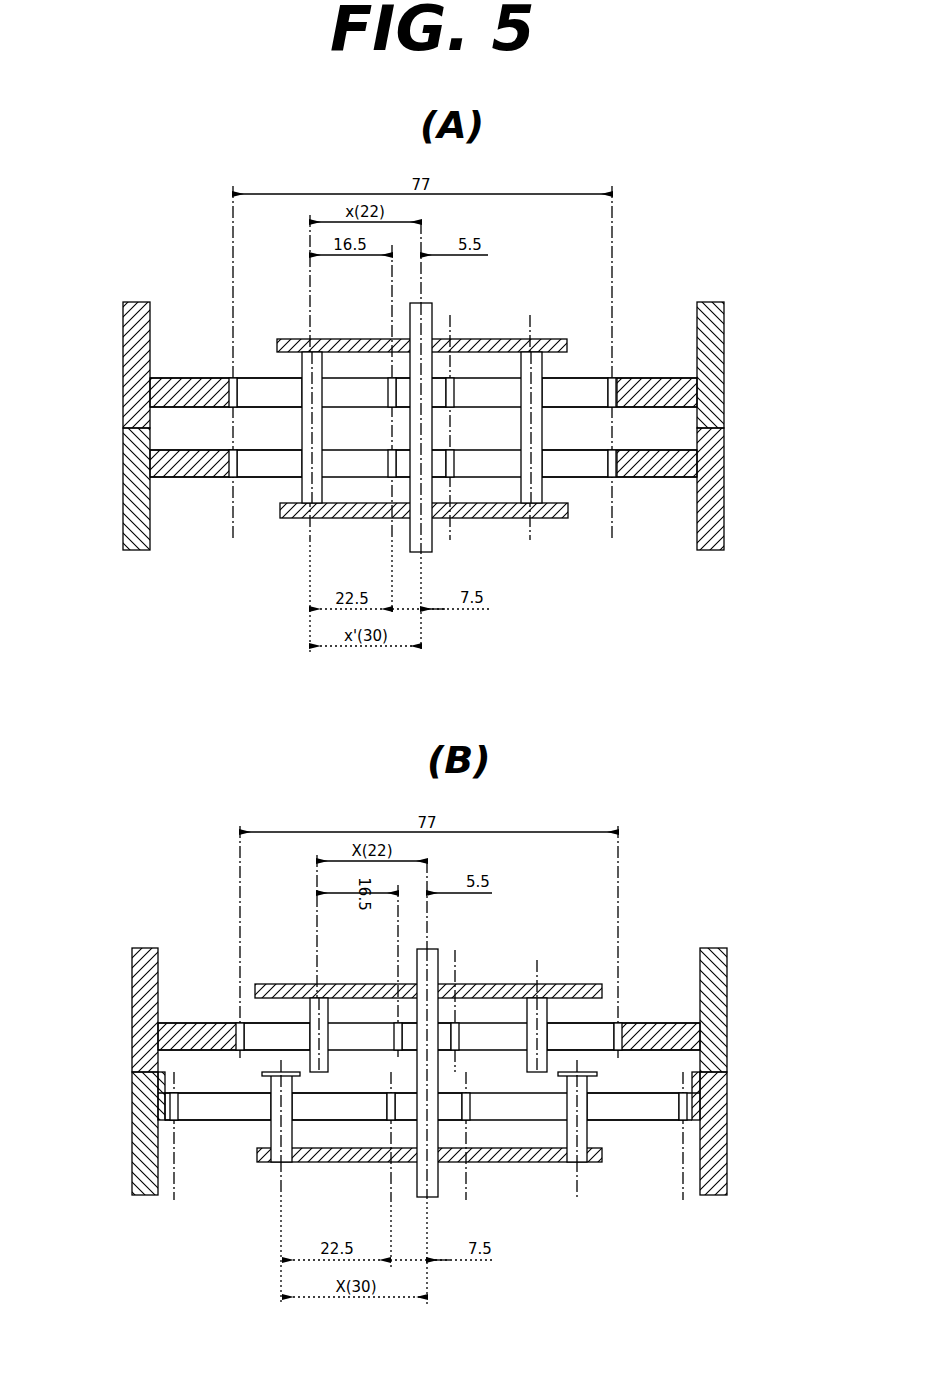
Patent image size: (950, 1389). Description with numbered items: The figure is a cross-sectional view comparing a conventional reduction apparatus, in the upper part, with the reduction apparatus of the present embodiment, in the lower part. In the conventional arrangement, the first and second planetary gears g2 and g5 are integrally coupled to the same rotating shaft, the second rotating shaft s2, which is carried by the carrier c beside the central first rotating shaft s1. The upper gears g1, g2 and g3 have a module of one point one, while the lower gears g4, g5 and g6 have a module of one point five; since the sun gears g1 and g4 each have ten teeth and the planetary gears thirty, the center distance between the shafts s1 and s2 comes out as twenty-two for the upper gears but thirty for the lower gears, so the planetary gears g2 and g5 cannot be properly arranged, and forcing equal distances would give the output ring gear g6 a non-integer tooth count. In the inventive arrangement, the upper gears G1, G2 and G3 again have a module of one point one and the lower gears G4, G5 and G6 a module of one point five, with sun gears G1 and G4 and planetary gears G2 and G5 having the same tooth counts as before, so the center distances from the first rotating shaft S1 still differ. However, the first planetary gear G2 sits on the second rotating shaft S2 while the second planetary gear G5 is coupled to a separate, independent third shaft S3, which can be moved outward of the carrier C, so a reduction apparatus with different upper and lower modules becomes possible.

The sun gear g1 is at (438, 390).
The first planetary gear g2 is at (255, 380).
The upper gear g3 is at (217, 390).
The sun gear g4 is at (437, 467).
The second planetary gear g5 is at (268, 463).
The output ring gear g6 is at (223, 475).
The first rotating shaft s1 is at (430, 320).
The second rotating shaft s2 is at (309, 342).
The carrier c is at (560, 340).
The sun gear G1 is at (446, 1033).
The first planetary gear G2 is at (262, 1027).
The upper gear G3 is at (225, 1037).
The sun gear G4 is at (440, 1108).
The second planetary gear G5 is at (265, 1152).
The output ring gear G6 is at (150, 1140).
The first rotating shaft S1 is at (437, 970).
The second rotating shaft S2 is at (318, 990).
The third shaft S3 is at (572, 1163).
The carrier C is at (590, 995).